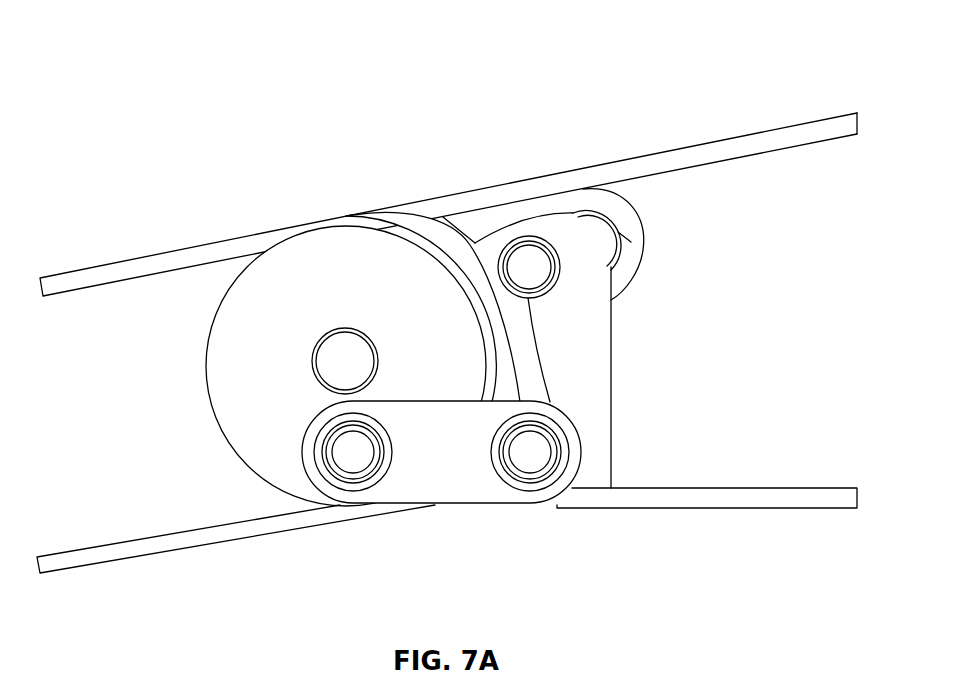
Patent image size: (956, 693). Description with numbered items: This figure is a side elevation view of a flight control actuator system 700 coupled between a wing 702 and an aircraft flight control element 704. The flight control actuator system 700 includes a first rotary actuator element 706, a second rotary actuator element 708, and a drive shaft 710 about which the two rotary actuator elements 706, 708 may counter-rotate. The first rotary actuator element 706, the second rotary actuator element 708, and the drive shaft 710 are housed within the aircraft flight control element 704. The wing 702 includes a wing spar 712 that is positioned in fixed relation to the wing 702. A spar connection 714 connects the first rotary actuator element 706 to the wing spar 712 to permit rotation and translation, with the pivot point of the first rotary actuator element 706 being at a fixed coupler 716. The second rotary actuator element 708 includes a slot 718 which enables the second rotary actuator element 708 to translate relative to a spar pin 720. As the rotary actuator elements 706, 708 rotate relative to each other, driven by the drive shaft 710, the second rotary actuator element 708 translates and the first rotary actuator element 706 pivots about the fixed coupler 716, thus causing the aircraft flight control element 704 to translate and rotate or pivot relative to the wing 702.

The flight control actuator system 700 is at (278, 72).
The wing 702 is at (800, 135).
The aircraft flight control element 704 is at (131, 268).
The first rotary actuator element 706 is at (237, 402).
The second rotary actuator element 708 is at (583, 197).
The drive shaft 710 is at (342, 358).
The wing spar 712 is at (592, 338).
The spar connection 714 is at (450, 490).
The fixed coupler 716 is at (355, 455).
The slot 718 is at (622, 232).
The spar pin 720 is at (530, 260).